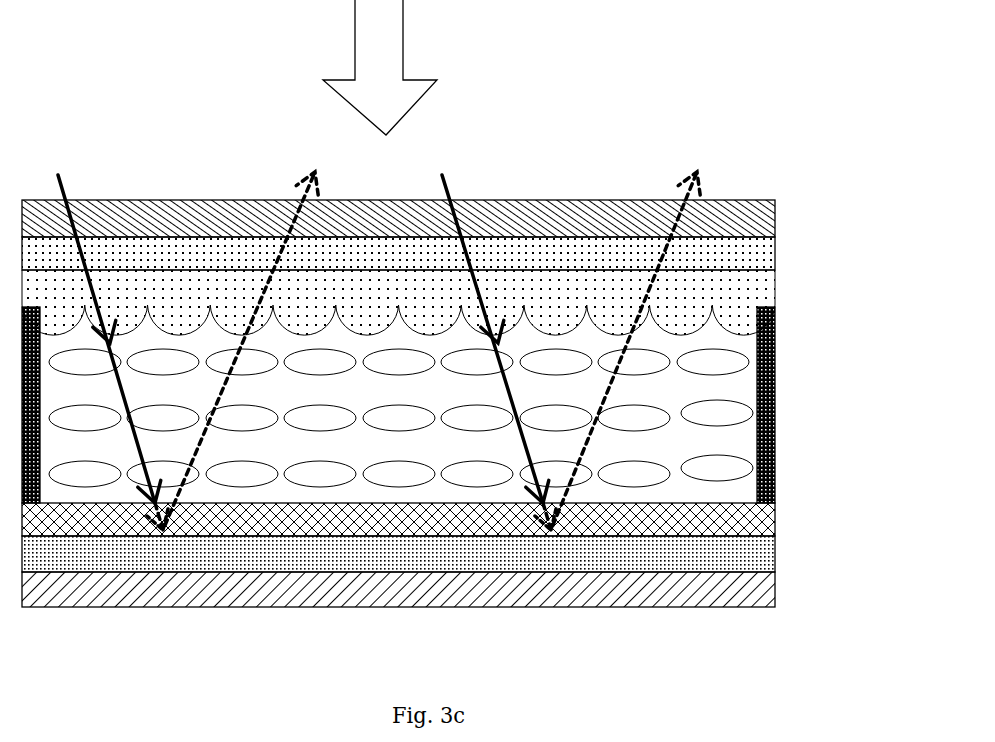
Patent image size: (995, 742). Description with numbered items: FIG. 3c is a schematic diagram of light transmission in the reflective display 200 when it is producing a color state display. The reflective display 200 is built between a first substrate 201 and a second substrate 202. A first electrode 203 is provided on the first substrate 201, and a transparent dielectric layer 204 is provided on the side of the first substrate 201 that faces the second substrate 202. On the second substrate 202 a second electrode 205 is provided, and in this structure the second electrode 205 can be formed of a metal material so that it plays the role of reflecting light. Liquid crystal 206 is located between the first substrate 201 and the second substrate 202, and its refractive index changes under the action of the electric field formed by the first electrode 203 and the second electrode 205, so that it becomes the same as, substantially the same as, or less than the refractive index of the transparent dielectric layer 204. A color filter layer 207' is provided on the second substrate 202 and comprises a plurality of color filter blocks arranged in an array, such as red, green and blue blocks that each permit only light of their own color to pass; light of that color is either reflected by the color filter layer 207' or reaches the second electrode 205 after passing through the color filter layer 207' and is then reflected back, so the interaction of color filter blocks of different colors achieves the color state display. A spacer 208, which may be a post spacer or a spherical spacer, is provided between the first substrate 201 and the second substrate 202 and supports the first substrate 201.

The reflective display 200 is at (412, 632).
The first substrate 201 is at (737, 220).
The first electrode 203 is at (738, 263).
The transparent dielectric layer 204 is at (738, 305).
The liquid crystal 206 is at (717, 413).
The spacer 208 is at (777, 457).
The color filter layer 207' is at (461, 527).
The second electrode 205 is at (735, 547).
The second substrate 202 is at (730, 590).